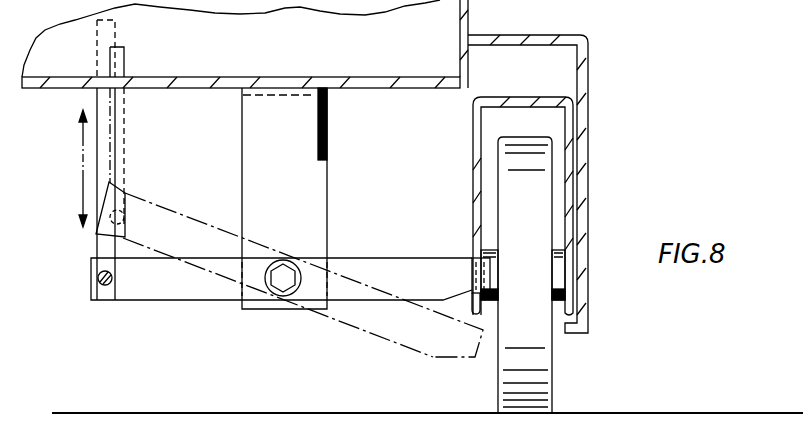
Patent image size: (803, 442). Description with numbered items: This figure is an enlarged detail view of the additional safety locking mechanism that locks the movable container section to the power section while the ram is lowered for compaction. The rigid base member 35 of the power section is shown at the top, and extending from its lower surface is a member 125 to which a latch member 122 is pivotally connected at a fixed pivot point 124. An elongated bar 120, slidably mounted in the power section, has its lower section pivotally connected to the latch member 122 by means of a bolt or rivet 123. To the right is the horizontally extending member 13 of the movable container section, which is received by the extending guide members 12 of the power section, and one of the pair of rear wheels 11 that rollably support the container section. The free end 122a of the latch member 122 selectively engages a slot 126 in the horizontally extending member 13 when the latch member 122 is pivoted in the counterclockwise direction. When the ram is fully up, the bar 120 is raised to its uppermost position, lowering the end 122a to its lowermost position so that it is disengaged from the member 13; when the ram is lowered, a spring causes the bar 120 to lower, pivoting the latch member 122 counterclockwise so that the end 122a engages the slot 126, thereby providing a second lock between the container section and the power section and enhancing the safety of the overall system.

The rear wheels 11 is at (520, 137).
The guide members 12 is at (587, 120).
The horizontally extending member 13 is at (472, 150).
The base member 35 is at (338, 80).
The bar 120 is at (116, 64).
The latch member 122 is at (170, 302).
The end of latch 122a is at (469, 273).
The bolt or rivet 123 is at (97, 278).
The fixed pivot point 124 is at (285, 290).
The member 125 is at (242, 178).
The slot 126 is at (482, 312).